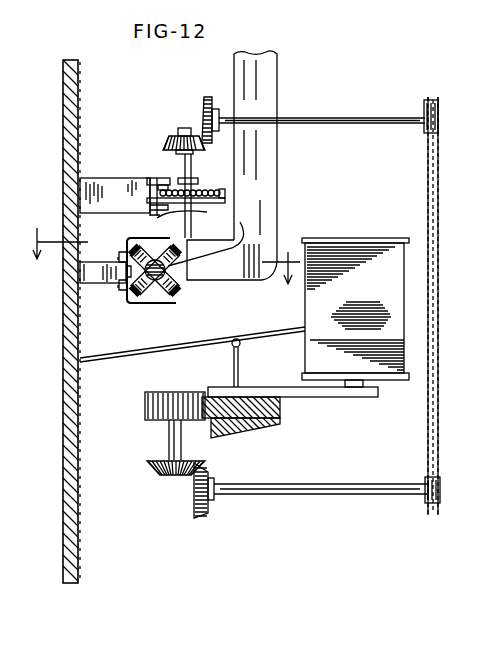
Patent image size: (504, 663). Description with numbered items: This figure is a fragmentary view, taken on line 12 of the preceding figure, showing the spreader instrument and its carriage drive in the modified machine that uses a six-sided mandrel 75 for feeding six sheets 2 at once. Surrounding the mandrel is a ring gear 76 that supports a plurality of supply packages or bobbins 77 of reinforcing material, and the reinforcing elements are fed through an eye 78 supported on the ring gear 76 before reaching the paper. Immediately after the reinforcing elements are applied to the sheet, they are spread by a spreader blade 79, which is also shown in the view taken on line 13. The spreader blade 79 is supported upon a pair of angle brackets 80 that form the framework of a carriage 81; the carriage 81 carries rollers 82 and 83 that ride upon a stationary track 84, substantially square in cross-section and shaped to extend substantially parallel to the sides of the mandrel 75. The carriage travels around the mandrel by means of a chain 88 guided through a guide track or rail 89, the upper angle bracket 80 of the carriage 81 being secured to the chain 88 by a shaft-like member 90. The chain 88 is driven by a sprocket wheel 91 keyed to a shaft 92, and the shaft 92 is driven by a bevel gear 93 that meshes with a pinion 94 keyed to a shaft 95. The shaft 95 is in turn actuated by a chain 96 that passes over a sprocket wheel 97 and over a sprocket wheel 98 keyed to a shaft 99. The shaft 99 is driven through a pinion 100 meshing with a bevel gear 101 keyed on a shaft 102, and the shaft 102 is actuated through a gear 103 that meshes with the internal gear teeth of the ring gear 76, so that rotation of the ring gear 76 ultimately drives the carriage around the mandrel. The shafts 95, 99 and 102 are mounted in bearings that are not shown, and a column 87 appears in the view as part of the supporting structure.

The sheet 2 is at (80, 402).
The section line 12— 12 is at (300, 330).
The section line 13— 13 is at (156, 245).
The six-sided mandrel 75 is at (70, 198).
The ring gear 76 is at (274, 406).
The supply package or bobbin 77 is at (364, 262).
The eye 78 is at (240, 346).
The spreader blade 79 is at (78, 270).
The angle bracket 80 is at (134, 238).
The carriage 81 is at (165, 247).
The roller 82 is at (175, 259).
The roller 83 is at (125, 289).
The stationary track 84 is at (163, 268).
The column 87 is at (270, 228).
The chain 88 is at (160, 178).
The guide track or rail 89 is at (150, 178).
The shaft-like member 90 is at (200, 235).
The sprocket wheel 91 is at (216, 190).
The shaft 92 is at (185, 165).
The bevel gear 93 is at (169, 134).
The pinion 94 is at (208, 97).
The shaft 95 is at (313, 118).
The chain 96 is at (436, 172).
The sprocket wheel 97 is at (432, 105).
The sprocket wheel 98 is at (440, 488).
The shaft 99 is at (348, 484).
The pinion 100 is at (212, 505).
The bevel gear 101 is at (175, 477).
The shaft 102 is at (168, 445).
The gear 103 is at (183, 398).